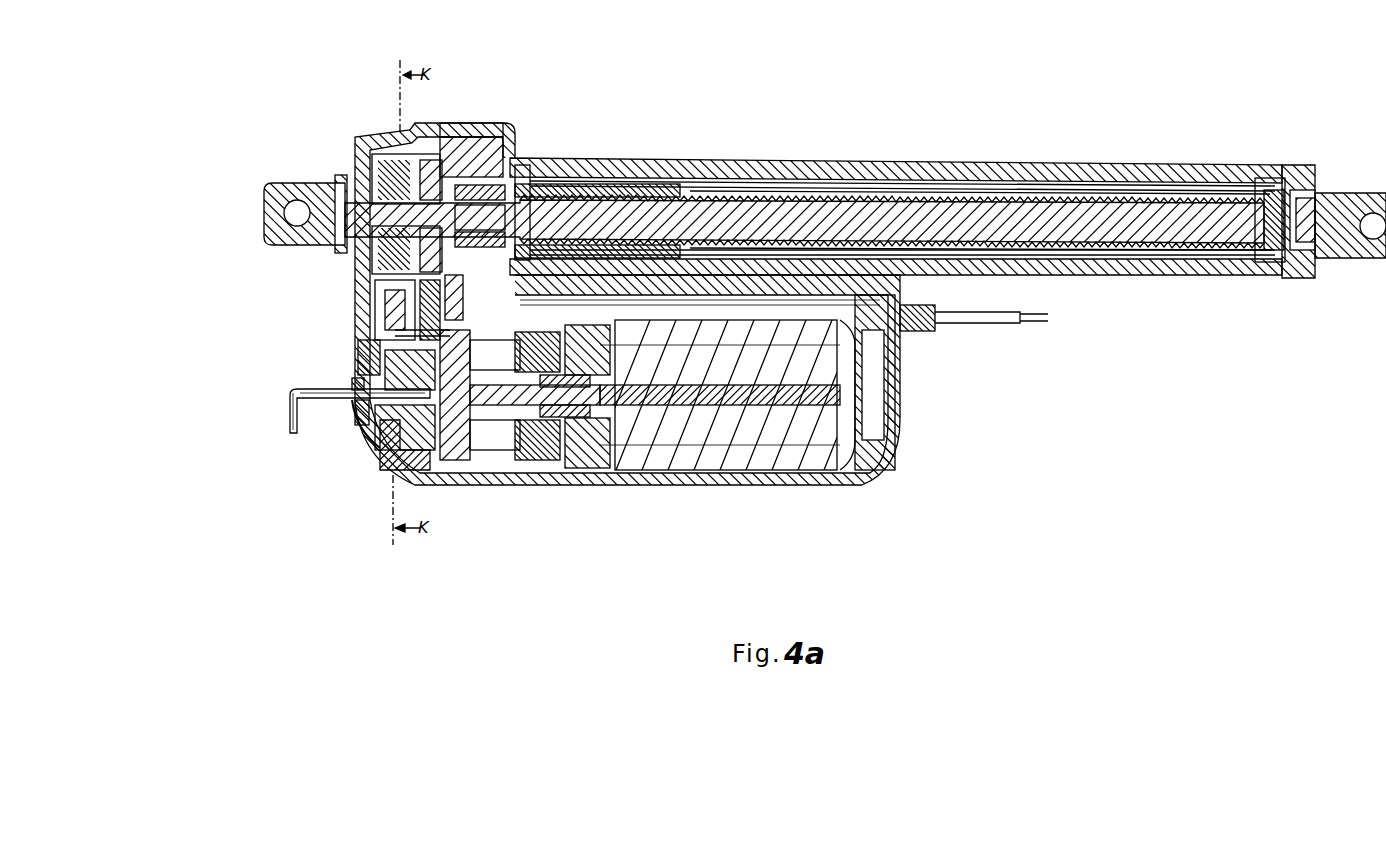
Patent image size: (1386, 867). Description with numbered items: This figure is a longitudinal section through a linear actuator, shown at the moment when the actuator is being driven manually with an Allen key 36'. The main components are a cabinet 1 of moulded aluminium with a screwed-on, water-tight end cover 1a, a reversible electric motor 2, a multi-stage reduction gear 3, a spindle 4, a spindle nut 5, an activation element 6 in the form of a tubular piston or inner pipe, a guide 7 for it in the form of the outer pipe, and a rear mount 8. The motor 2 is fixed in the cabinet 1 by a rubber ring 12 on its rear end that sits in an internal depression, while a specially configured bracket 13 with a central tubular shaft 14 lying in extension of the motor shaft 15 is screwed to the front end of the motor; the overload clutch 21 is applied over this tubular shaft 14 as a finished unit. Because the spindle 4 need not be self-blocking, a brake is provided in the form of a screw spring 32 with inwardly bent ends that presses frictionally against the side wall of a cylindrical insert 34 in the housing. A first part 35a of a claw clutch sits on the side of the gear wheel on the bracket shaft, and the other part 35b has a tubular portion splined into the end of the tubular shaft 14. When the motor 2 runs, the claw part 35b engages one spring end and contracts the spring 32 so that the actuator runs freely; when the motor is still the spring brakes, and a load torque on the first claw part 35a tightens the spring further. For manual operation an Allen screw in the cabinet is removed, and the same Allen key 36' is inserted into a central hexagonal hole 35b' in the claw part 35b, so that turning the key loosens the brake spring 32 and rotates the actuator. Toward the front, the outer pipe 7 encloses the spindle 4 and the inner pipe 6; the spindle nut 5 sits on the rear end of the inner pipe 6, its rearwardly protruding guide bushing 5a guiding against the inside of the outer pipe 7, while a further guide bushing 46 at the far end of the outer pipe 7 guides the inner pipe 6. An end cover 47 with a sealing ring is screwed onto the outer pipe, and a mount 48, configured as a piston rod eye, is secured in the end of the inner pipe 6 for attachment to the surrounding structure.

The cabinet 1 is at (897, 430).
The end cover 1a is at (385, 468).
The reversible electric motor 2 is at (805, 440).
The reduction gear 3 is at (355, 315).
The spindle 4 is at (738, 200).
The spindle nut 5 is at (596, 165).
The guide bushing 5a is at (532, 190).
The activation element 6 is at (1095, 165).
The guide 7 is at (992, 165).
The rear mount 8 is at (325, 178).
The rubber ring 12 is at (903, 358).
The bracket 13 is at (580, 470).
The tubular shaft 14 is at (480, 462).
The motor shaft 15 is at (745, 400).
The overload clutch 21 is at (540, 462).
The screw spring 32 is at (412, 483).
The cylindrical insert 34 is at (443, 485).
The first part of claw clutch 35a is at (355, 357).
The other part of claw clutch 35b is at (693, 433).
The central hexagonal hole 35b' is at (693, 433).
The Allen key 36' is at (270, 414).
The guide bushing 46 is at (1263, 165).
The end cap 47 is at (1308, 165).
The mount 48 is at (1380, 270).